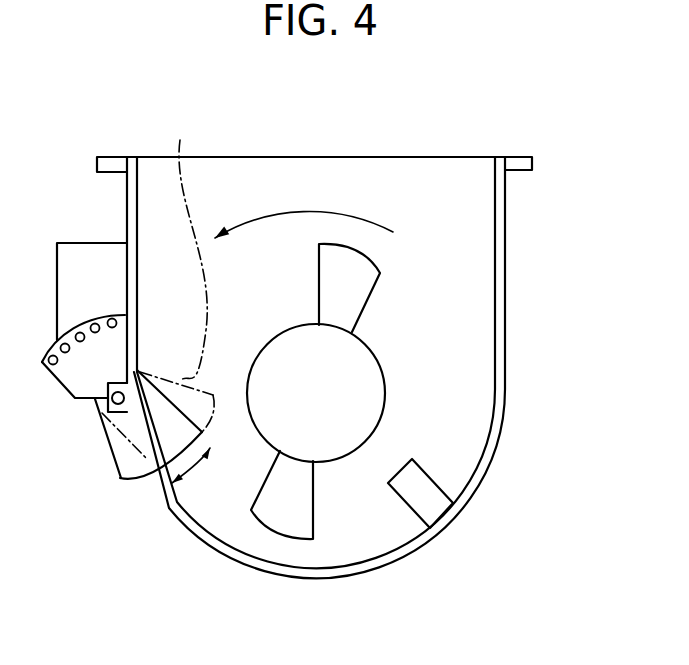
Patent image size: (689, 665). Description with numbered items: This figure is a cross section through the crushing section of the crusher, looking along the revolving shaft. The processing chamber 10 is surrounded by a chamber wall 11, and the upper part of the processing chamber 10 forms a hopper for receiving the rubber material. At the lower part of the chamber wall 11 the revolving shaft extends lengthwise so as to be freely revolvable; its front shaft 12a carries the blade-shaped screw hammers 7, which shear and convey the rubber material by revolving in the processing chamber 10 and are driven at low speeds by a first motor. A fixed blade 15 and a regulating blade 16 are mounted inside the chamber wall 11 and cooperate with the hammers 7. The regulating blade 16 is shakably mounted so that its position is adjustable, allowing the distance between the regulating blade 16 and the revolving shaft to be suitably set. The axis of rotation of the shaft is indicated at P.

The processing chamber 10 is at (343, 322).
The chamber wall 11 is at (442, 215).
The screw hammers 7 is at (355, 285).
The front shaft 12a is at (358, 370).
The rotation center P is at (310, 397).
The fixed blades 15 is at (425, 483).
The regulating blades 16 is at (62, 463).